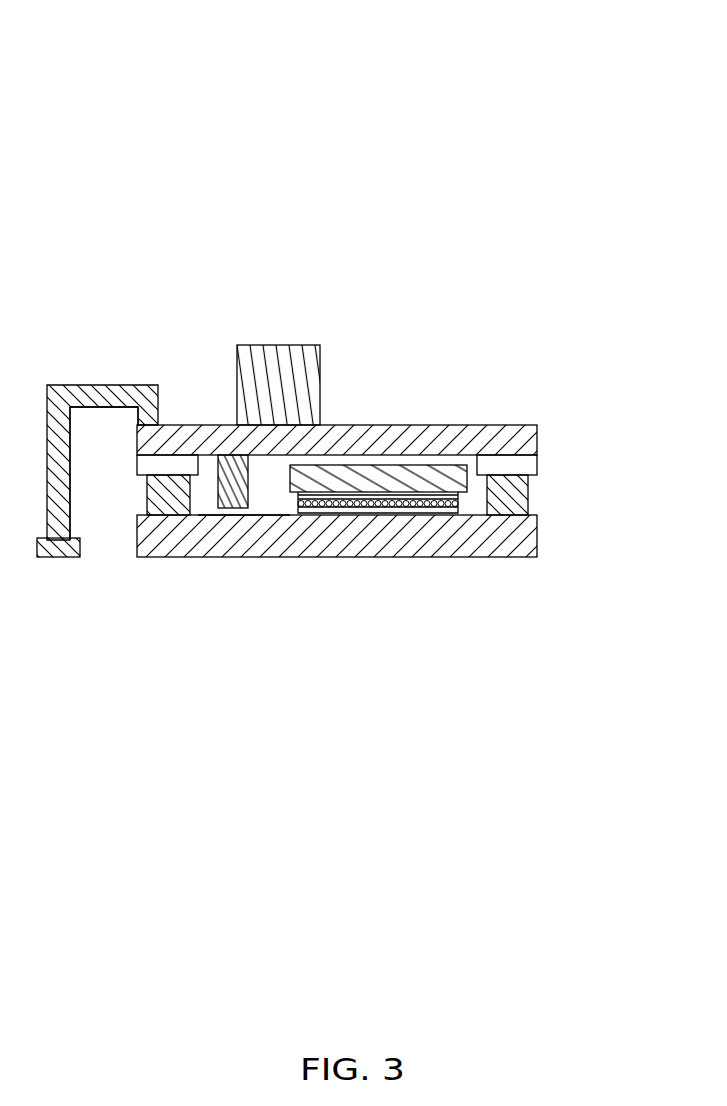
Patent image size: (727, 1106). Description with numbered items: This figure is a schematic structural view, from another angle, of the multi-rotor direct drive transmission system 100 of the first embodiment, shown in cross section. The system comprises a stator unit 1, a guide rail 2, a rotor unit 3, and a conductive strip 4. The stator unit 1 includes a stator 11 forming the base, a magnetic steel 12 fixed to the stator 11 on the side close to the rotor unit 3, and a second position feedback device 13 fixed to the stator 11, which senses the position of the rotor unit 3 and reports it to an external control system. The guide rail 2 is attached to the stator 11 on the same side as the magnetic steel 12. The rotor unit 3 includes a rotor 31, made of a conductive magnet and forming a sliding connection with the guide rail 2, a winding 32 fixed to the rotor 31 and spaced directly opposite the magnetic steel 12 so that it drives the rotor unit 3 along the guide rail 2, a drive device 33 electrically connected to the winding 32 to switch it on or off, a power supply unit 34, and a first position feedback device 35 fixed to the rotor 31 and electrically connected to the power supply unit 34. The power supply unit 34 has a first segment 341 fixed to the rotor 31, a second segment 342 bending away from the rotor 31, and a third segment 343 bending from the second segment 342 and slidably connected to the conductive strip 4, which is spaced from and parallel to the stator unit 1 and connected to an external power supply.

The multi-rotor direct drive transmission system 100 is at (331, 58).
The stator unit 1 is at (402, 677).
The stator 11 is at (367, 537).
The magnetic steel 12 is at (308, 498).
The second position feedback device 13 is at (230, 517).
The guide rail 2 is at (163, 513).
The rotor unit 3 is at (413, 240).
The rotor 31 is at (400, 443).
The winding 32 is at (322, 476).
The drive device 33 is at (263, 385).
The power supply unit 34 is at (145, 283).
The first segment 341 is at (155, 415).
The second segment 342 is at (110, 393).
The third segment 343 is at (48, 410).
The first position feedback device 35 is at (225, 457).
The conductive strip 4 is at (58, 558).